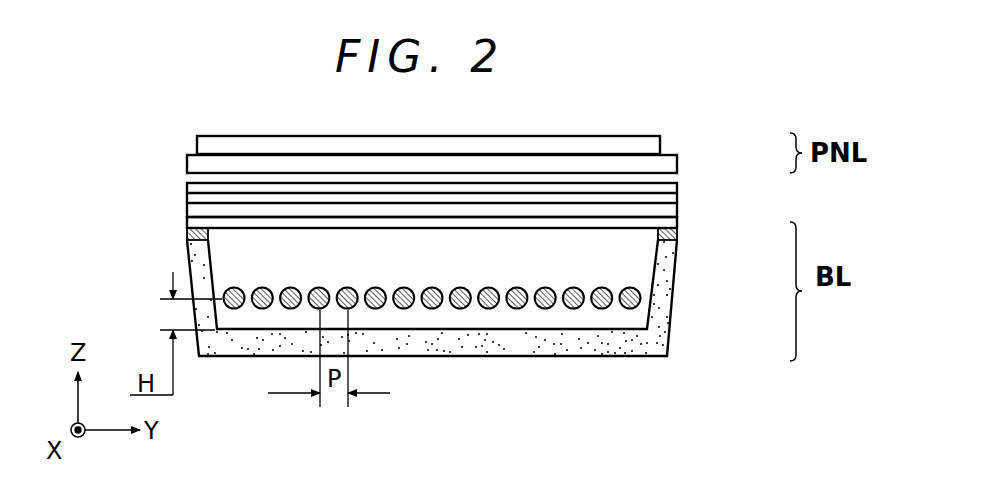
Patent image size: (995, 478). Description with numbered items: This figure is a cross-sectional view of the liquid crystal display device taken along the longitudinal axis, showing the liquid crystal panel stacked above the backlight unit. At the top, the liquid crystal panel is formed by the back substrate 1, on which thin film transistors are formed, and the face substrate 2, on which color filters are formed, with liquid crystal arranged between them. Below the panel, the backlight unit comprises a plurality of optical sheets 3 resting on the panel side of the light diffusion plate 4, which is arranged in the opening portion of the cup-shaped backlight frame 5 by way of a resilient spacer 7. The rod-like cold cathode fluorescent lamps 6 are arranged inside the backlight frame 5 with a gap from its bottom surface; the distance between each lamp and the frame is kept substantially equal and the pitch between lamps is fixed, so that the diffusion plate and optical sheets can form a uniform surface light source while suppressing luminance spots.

The back substrate 1 is at (678, 163).
The face substrate 2 is at (663, 142).
The optical sheets 3 is at (690, 181).
The light diffusion plate 4 is at (678, 222).
The backlight frame 5 is at (662, 337).
The cold cathode fluorescent lamps 6 is at (641, 298).
The spacer 7 is at (679, 234).